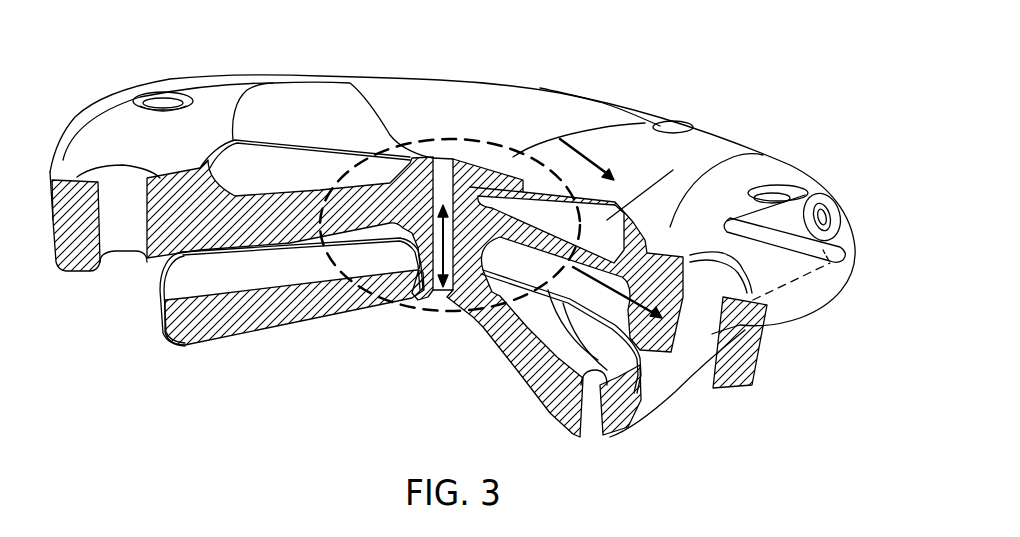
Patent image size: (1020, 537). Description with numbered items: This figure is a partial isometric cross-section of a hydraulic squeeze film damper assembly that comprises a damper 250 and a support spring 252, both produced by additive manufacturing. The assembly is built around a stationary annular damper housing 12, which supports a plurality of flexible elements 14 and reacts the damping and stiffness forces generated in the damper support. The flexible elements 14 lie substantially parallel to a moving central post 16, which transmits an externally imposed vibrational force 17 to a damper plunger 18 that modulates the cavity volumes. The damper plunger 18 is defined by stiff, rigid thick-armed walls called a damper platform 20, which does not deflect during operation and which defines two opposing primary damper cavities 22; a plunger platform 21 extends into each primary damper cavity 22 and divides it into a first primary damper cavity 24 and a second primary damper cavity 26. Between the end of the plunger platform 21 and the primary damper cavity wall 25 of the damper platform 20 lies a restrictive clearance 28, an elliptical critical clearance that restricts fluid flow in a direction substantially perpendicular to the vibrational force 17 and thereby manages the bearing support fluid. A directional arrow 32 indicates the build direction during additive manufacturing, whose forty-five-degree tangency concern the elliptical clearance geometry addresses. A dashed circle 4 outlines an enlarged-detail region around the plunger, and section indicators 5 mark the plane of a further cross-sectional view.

The stationary annular damper housing 12 is at (595, 101).
The flexible elements 14 is at (243, 247).
The central post 16 is at (453, 160).
The vibrational force 17 is at (423, 287).
The damper plunger 18 is at (762, 152).
The damper platform 20 is at (437, 154).
The plunger platform 21 is at (557, 196).
The primary damper cavities 22 is at (423, 258).
The first primary damper cavity 24 is at (287, 160).
The primary damper cavity wall 25 is at (473, 317).
The second primary damper cavity 26 is at (183, 288).
The restrictive clearance 28 is at (444, 290).
The directional arrow 32 is at (690, 267).
The detail region 4 is at (402, 312).
The section line 5 is at (447, 202).
The damper 250 is at (655, 372).
The support spring 252 is at (636, 160).